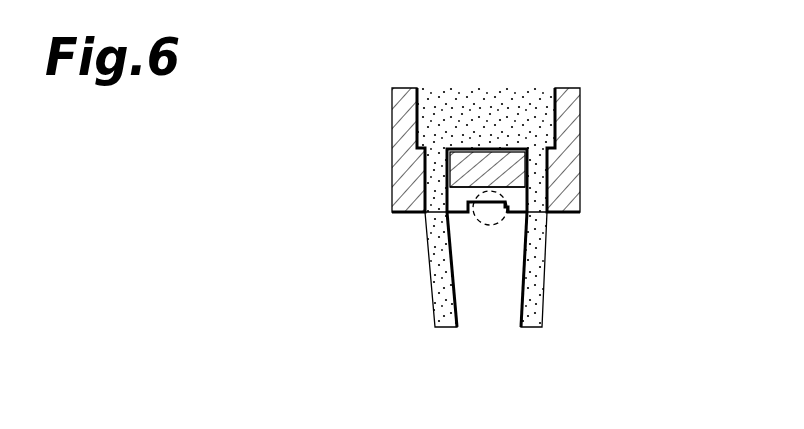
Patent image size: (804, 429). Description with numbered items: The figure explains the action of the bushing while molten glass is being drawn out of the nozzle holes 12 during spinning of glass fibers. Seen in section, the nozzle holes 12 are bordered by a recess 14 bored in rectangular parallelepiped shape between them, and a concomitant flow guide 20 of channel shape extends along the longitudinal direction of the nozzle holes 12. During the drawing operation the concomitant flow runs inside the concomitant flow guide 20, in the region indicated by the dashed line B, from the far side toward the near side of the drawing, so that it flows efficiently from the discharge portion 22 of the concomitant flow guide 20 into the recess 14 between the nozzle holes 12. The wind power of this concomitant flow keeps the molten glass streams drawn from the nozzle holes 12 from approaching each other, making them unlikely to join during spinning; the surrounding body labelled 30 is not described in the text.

The nozzle holes 12 is at (420, 218).
The recess 14 is at (452, 202).
The concomitant flow guide 20 is at (448, 278).
The discharge portion 22 is at (512, 207).
The package body 30 is at (582, 117).
The dashed line B is at (492, 224).